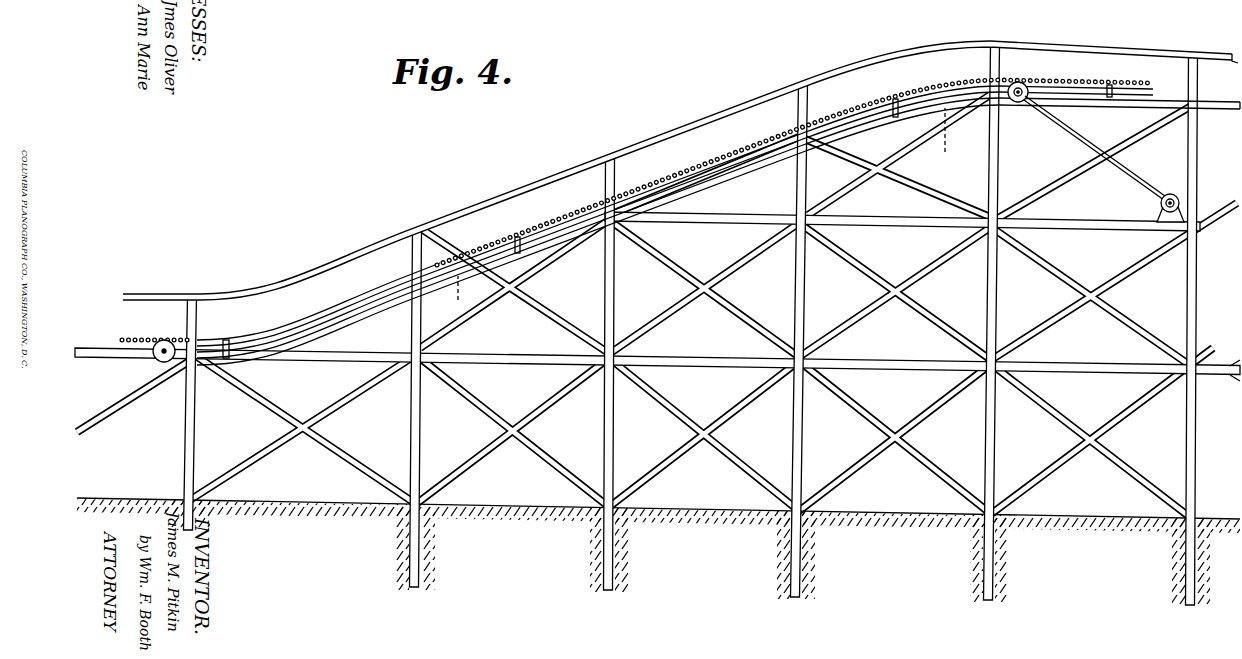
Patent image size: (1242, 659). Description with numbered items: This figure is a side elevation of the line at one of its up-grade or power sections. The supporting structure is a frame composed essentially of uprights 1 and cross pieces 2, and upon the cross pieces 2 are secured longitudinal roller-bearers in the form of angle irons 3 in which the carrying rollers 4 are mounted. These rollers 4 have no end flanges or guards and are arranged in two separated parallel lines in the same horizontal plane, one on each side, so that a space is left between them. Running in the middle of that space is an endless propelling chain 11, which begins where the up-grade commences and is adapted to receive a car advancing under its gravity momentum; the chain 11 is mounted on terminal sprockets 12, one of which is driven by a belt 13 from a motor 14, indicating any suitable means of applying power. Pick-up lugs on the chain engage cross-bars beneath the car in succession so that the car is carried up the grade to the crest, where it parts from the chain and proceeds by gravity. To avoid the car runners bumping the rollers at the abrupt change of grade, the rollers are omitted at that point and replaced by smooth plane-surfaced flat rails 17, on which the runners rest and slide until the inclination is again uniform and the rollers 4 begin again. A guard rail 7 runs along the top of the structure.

The uprights 1 is at (197, 319).
The cross pieces 2 is at (232, 360).
The angle irons 3 is at (120, 349).
The carrying rollers 4 is at (140, 338).
The guard rail 7 is at (317, 272).
The endless propelling chain 11 is at (703, 212).
The terminal sprockets 12 is at (156, 358).
The belt 13 is at (1087, 141).
The motor 14 is at (1160, 203).
The flat rails 17 is at (303, 318).